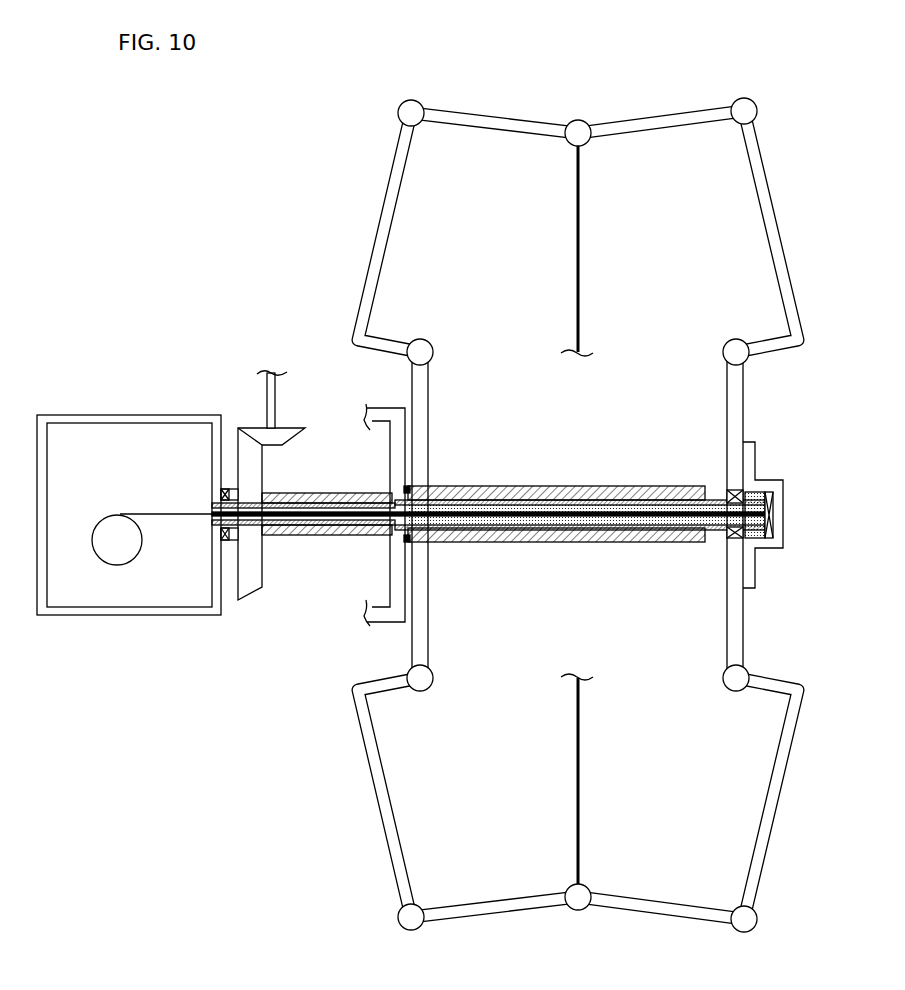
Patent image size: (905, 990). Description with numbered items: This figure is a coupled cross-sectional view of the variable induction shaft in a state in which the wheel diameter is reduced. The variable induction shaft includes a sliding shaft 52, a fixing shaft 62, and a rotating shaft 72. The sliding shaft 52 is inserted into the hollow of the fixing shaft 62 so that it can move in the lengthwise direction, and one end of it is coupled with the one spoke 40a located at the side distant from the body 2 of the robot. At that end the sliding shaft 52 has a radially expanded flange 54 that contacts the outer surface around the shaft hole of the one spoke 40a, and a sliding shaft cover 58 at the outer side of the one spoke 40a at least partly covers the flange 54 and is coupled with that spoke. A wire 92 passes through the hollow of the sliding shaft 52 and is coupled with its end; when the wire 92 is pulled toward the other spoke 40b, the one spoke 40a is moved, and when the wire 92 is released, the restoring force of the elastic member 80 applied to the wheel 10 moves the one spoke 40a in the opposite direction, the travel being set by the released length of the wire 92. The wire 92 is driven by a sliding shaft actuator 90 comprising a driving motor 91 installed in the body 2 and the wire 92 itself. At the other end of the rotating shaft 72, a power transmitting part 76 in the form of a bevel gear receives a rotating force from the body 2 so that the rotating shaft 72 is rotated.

The wheel 10 is at (385, 222).
The elastic member 80 is at (585, 248).
The sliding shaft actuator 90 is at (108, 502).
The driving motor 91 is at (115, 553).
The wire 92 is at (182, 513).
The body 2 is at (385, 406).
The one spoke 40a is at (745, 408).
The other spoke 40b is at (422, 408).
The sliding shaft 52 is at (470, 523).
The fixing shaft 62 is at (632, 487).
The rotating shaft 72 is at (596, 543).
The flange 54 is at (757, 494).
The sliding shaft cover 58 is at (754, 574).
The power transmitting part 76 is at (283, 458).